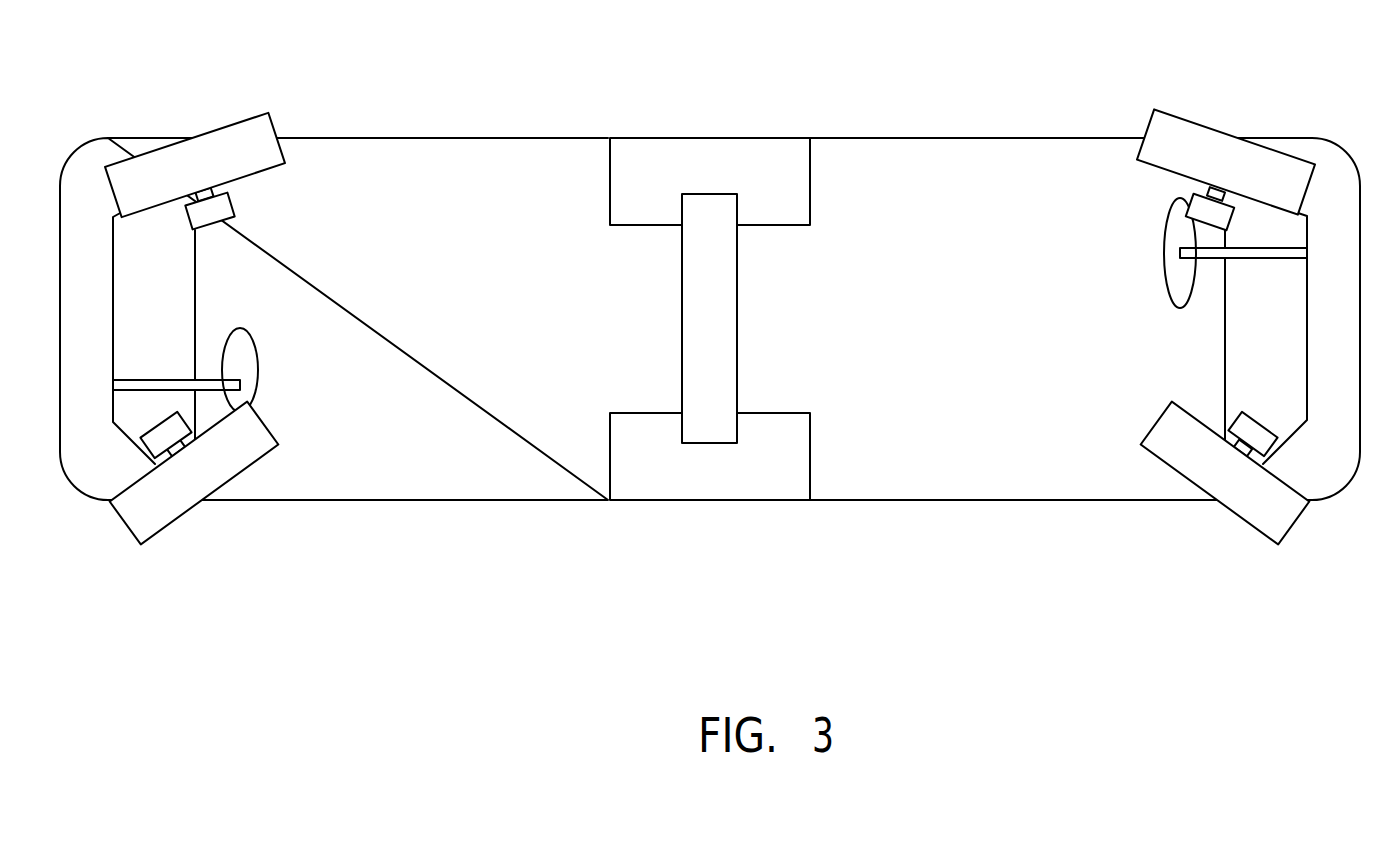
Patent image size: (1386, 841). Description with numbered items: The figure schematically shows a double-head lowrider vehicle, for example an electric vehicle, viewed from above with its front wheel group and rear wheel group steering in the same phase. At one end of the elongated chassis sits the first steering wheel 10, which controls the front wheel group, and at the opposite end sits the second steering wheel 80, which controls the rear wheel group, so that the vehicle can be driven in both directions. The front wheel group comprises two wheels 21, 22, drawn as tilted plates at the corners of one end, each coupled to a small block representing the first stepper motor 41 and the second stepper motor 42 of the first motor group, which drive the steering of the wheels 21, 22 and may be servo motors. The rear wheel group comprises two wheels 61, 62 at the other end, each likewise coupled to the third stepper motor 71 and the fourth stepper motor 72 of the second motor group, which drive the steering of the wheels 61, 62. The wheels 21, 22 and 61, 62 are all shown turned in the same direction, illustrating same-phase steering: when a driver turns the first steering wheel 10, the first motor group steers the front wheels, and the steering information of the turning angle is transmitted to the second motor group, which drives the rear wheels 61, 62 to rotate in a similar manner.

The first steering wheel 10 is at (1175, 228).
The wheel 21 is at (1203, 152).
The wheel 22 is at (1247, 508).
The first stepper motor 41 is at (1227, 212).
The second stepper motor 42 is at (1253, 427).
The wheel 61 is at (208, 152).
The wheel 62 is at (175, 497).
The third stepper motor 71 is at (227, 207).
The fourth stepper motor 72 is at (155, 433).
The second steering wheel 80 is at (243, 355).